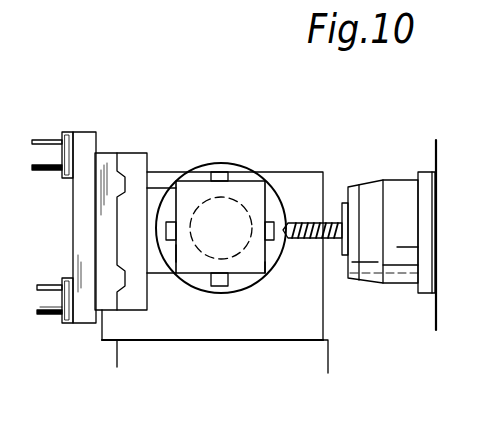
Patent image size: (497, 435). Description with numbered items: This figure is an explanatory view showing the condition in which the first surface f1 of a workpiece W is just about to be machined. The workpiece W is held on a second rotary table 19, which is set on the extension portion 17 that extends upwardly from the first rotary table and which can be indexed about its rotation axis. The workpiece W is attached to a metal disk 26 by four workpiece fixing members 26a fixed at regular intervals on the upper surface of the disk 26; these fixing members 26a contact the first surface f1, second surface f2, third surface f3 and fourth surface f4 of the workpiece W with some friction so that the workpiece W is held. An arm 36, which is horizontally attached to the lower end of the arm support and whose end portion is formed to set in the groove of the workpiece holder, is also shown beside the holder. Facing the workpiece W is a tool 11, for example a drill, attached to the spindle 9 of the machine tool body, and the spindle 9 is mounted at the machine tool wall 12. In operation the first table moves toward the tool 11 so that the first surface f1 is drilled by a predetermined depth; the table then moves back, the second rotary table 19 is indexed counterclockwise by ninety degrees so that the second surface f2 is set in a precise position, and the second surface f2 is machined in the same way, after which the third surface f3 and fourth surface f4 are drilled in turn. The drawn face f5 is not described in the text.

The spindle 9 is at (394, 186).
The tool 11 is at (330, 223).
The wall 12 is at (435, 153).
The extension portion 17 is at (323, 318).
The second rotary table 19 is at (240, 252).
The metal disk 26 is at (284, 222).
The workpiece fixing member 26a is at (171, 222).
The arm 36 is at (157, 188).
The workpiece W is at (274, 169).
The first surface f1 is at (279, 271).
The second surface f2 is at (234, 181).
The third surface f3 is at (170, 253).
The fourth surface f4 is at (198, 284).
The face f5 is at (243, 190).